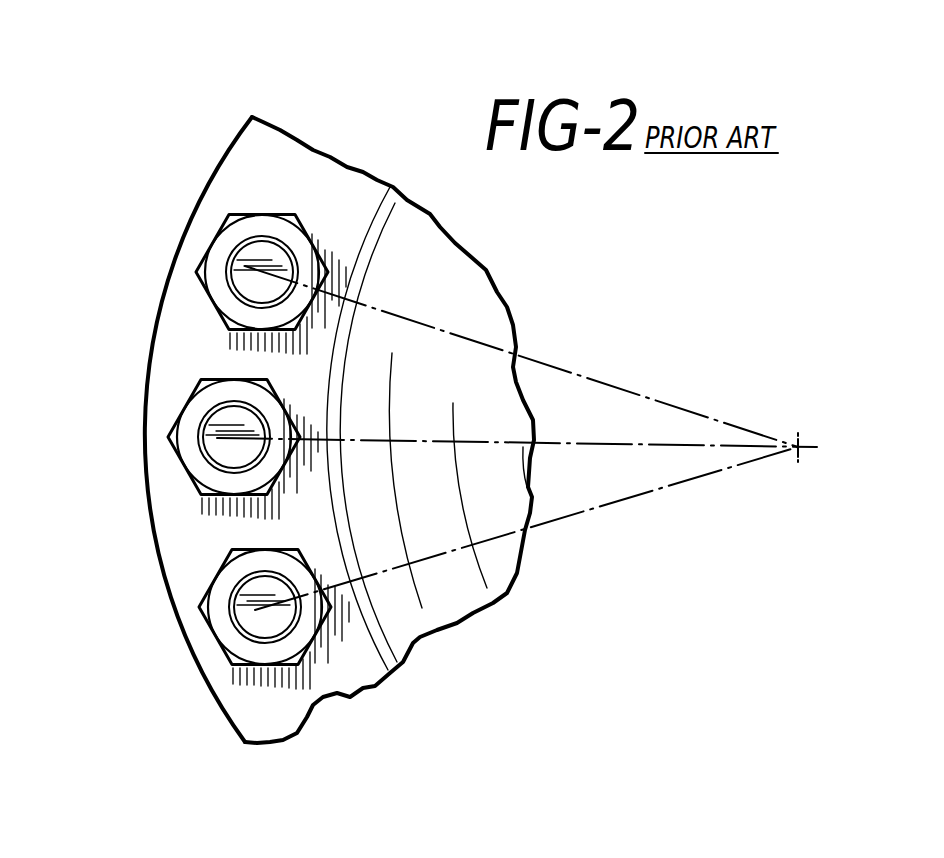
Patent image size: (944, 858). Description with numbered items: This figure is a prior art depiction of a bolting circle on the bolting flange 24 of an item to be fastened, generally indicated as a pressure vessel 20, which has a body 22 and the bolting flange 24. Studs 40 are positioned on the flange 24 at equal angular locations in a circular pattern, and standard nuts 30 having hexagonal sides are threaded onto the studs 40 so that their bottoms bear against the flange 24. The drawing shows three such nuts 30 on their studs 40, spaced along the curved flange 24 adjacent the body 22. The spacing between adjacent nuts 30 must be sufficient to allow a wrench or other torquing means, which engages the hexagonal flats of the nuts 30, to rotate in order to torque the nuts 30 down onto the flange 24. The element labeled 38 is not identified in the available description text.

The pressure vessel 20 is at (377, 163).
The body 22 is at (478, 293).
The bolting flange 24 is at (253, 152).
The hexagonal nut 30 is at (213, 230).
The washer 38 is at (200, 265).
The stud 40 is at (247, 290).